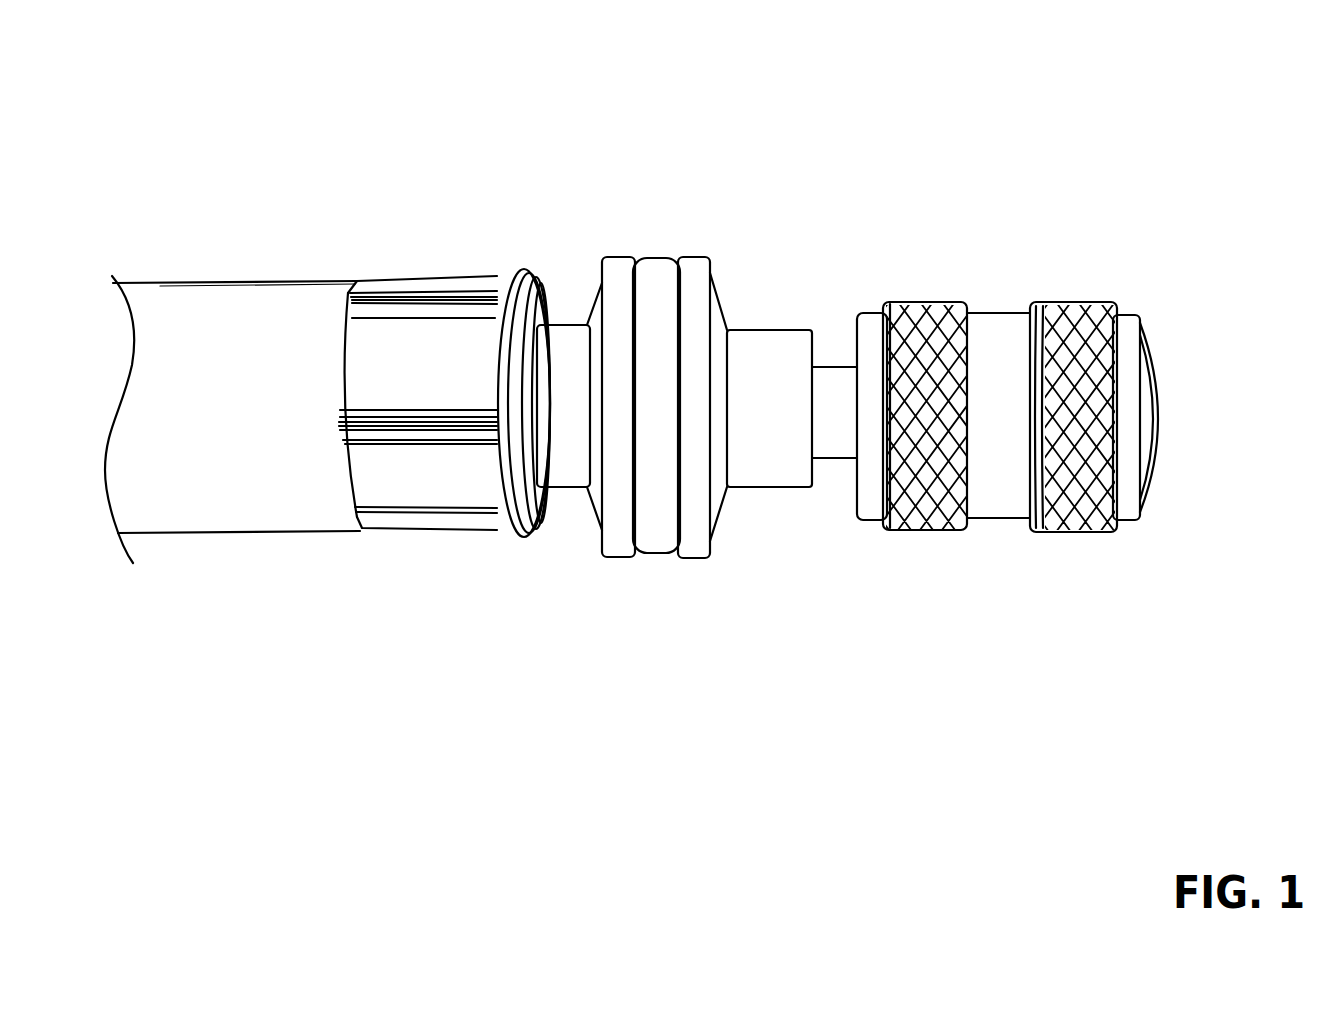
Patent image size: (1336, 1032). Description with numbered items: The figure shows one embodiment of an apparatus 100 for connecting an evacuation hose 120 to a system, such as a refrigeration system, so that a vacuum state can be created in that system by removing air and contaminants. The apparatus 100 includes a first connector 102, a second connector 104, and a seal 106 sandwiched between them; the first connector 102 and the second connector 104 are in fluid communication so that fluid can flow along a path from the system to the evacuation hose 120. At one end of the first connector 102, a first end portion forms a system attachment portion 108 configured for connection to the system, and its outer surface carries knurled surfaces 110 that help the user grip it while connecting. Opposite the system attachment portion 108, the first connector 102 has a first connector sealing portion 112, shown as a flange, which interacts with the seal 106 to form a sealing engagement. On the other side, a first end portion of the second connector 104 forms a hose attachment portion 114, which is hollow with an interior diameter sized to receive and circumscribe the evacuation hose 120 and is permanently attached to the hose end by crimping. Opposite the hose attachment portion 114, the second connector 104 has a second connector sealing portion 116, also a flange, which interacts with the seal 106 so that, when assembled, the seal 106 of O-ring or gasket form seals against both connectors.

The apparatus 100 is at (1025, 80).
The first connector 102 is at (853, 592).
The second connector 104 is at (514, 587).
The seal 106 is at (662, 557).
The system attachment portion 108 is at (1020, 250).
The knurled surfaces 110 is at (1060, 532).
The first connector sealing portion 112 is at (754, 273).
The hose attachment portion 114 is at (424, 247).
The second connector sealing portion 116 is at (583, 242).
The evacuation hose 120 is at (248, 530).